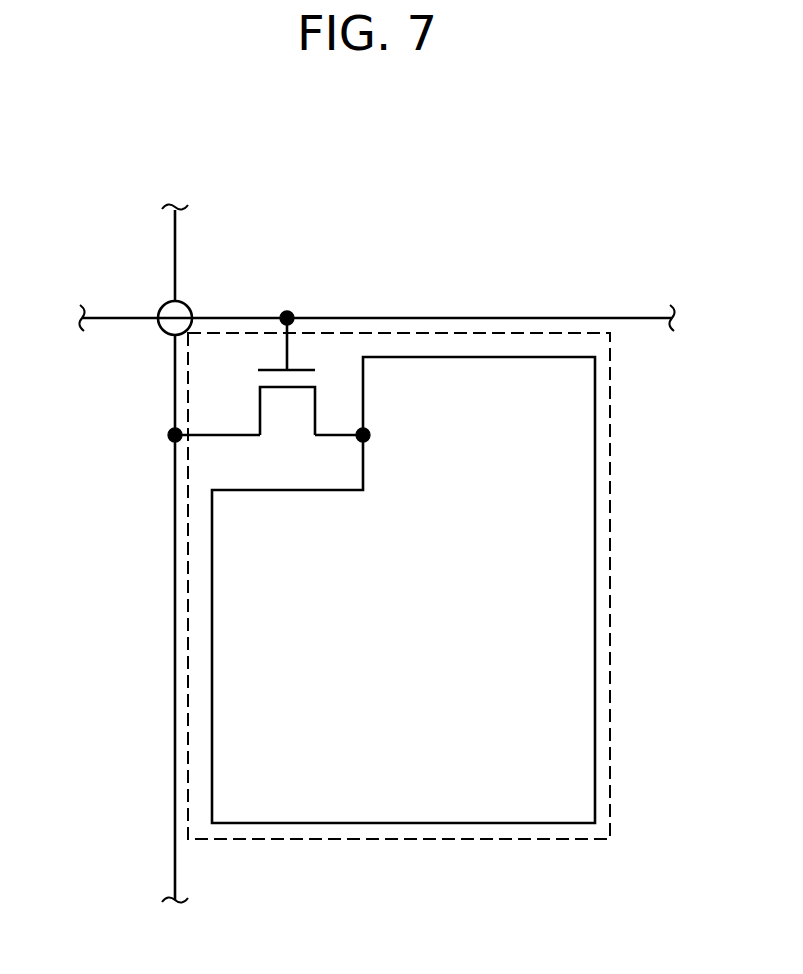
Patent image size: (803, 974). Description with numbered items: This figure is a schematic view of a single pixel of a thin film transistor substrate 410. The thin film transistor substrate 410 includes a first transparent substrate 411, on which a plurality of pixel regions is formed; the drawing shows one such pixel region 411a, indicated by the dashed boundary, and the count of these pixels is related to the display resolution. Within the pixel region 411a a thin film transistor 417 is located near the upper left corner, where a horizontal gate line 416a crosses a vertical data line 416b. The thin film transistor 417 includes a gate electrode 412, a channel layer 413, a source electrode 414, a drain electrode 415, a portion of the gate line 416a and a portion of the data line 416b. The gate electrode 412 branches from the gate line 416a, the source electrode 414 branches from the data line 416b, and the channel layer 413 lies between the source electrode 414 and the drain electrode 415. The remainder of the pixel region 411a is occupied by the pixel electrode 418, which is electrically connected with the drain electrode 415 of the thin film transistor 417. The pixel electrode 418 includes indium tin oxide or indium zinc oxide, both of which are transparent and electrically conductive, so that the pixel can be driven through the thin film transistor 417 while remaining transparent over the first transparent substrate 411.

The thin film transistor substrate 410 is at (571, 219).
The first transparent substrate 411 is at (705, 737).
The pixel region 411a is at (610, 414).
The gate electrode 412 is at (292, 335).
The channel layer 413 is at (272, 380).
The source electrode 414 is at (195, 452).
The drain electrode 415 is at (335, 433).
The gate line 416a is at (127, 319).
The data line 416b is at (173, 253).
The thin film transistor 417 is at (326, 326).
The pixel electrode 418 is at (580, 545).